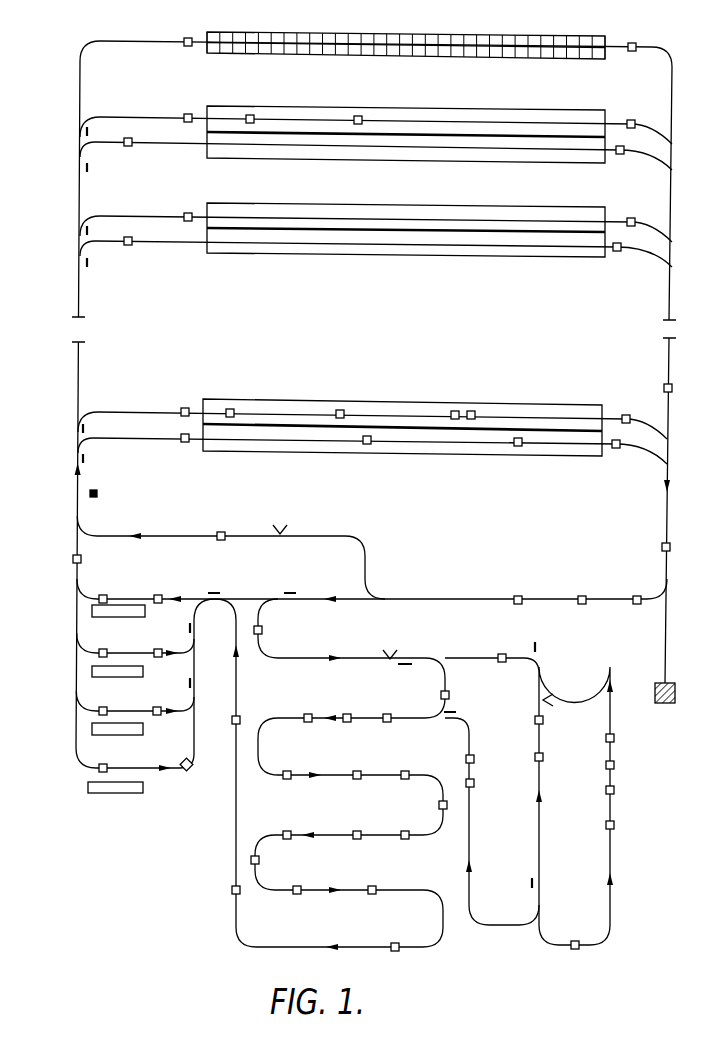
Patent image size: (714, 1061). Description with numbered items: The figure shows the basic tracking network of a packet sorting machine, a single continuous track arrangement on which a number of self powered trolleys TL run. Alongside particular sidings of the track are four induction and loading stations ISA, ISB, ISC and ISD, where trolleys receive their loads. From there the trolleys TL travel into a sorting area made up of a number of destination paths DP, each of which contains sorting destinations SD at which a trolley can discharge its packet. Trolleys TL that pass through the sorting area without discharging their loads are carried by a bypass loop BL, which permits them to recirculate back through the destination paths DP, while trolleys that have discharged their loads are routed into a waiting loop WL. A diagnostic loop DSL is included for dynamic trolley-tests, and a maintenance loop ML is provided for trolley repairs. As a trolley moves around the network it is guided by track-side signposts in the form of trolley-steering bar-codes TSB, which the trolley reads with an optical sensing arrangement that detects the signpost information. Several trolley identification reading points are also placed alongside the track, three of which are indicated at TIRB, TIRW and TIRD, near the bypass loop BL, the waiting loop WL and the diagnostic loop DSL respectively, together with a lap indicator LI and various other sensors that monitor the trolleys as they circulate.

The sorting destination SD is at (213, 32).
The destination path DP is at (162, 44).
The trolley-steering bar-code TSB is at (286, 504).
The lap indicator LI is at (109, 496).
The bypass loop BL is at (214, 538).
The trolley identification reading point TIRB is at (283, 513).
The trolley TL is at (510, 596).
The induction and loading station ISA is at (118, 625).
The induction and loading station ISB is at (117, 686).
The induction and loading station ISC is at (117, 743).
The induction and loading station ISD is at (115, 801).
The waiting loop WL is at (236, 800).
The trolley identification reading point TIRW is at (402, 638).
The trolley identification reading point TIRD is at (571, 701).
The diagnostic loop DSL is at (536, 835).
The maintenance loop ML is at (610, 810).